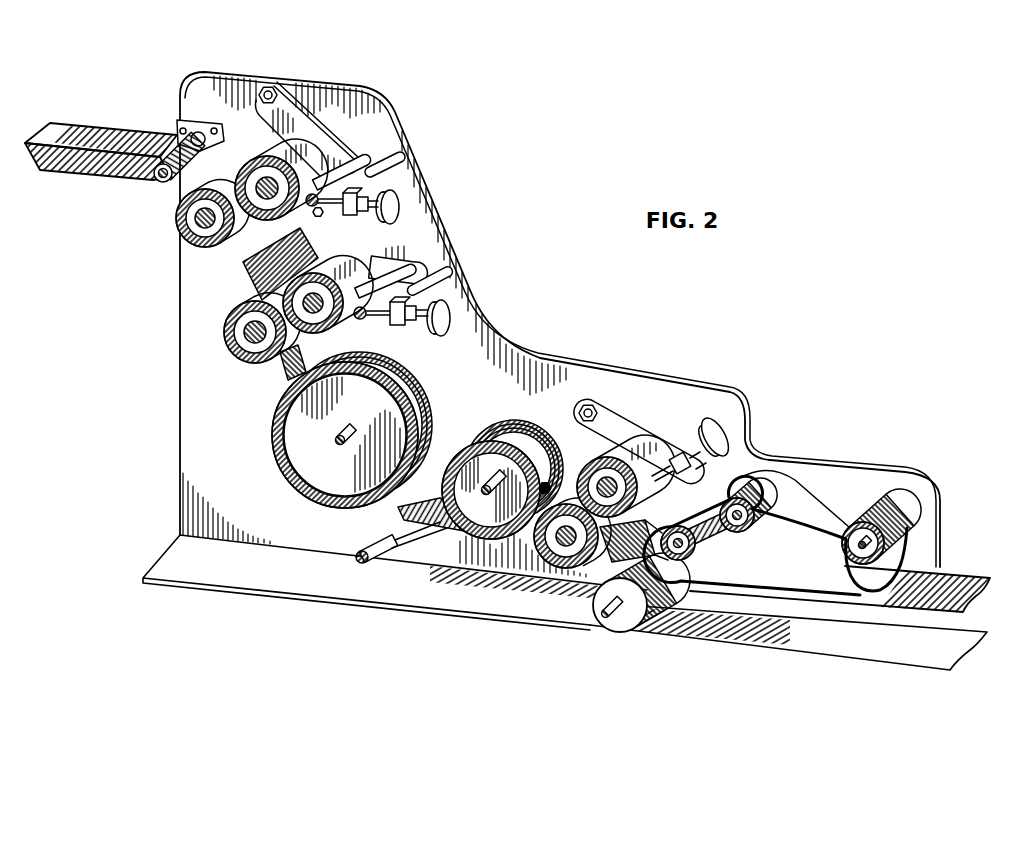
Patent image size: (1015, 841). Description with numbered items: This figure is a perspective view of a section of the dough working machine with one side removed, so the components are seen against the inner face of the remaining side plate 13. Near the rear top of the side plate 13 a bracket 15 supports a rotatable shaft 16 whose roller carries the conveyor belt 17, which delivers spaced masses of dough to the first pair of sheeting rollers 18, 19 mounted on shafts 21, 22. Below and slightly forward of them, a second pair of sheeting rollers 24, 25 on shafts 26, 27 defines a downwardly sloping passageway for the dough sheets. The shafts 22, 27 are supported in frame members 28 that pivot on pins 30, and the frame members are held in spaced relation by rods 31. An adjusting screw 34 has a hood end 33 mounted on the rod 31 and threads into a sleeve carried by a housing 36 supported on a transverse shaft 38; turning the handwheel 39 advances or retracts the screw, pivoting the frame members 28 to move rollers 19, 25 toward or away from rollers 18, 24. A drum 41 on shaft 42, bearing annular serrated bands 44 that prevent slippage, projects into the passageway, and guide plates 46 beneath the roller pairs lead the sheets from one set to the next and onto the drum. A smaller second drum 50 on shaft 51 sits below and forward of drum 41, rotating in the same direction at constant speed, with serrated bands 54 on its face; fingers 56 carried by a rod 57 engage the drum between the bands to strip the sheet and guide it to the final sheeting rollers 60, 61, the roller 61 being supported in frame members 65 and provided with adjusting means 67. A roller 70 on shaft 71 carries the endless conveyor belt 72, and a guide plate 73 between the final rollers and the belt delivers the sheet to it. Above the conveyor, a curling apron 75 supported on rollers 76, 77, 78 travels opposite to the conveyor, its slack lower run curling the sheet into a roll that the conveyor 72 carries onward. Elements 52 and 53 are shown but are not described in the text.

The side plate 13 is at (563, 364).
The bracket 15 is at (180, 120).
The rotatable shaft 16 is at (162, 188).
The conveyor belt 17 is at (89, 182).
The sheeting roller 18 is at (200, 247).
The sheeting roller 19 is at (275, 157).
The shaft 21 is at (210, 218).
The shaft 22 is at (270, 175).
The sheeting roller 24 is at (234, 343).
The sheeting roller 25 is at (358, 281).
The shaft 26 is at (258, 341).
The shaft 27 is at (317, 292).
The frame member 28 is at (303, 118).
The pin 30 is at (278, 92).
The rod 31 is at (363, 160).
The hood end 33 is at (357, 316).
The adjusting screw 34 is at (381, 324).
The housing 36 is at (413, 333).
The transverse shaft 38 is at (400, 164).
The handwheel 39 is at (403, 194).
The drum 41 is at (289, 484).
The shaft 42 is at (352, 444).
The annular serrated band 44 is at (423, 398).
The guide plate 46 is at (243, 264).
The second drum 50 is at (463, 452).
The shaft 51 is at (484, 502).
The guide plate 52 is at (431, 508).
The pivot pin 53 is at (370, 561).
The annular serrated band 54 is at (519, 441).
The finger 56 is at (548, 482).
The rod 57 is at (598, 413).
The sheeting roller 60 is at (550, 565).
The sheeting roller 61 is at (634, 452).
The frame member 65 is at (640, 402).
The adjusting means 67 is at (688, 465).
The roller 70 is at (640, 628).
The shaft 71 is at (617, 613).
The endless conveyor belt 72 is at (803, 654).
The guide plate 73 is at (656, 524).
The curling apron 75 is at (810, 500).
The roller 76 is at (707, 545).
The roller 77 is at (752, 516).
The roller 78 is at (842, 545).